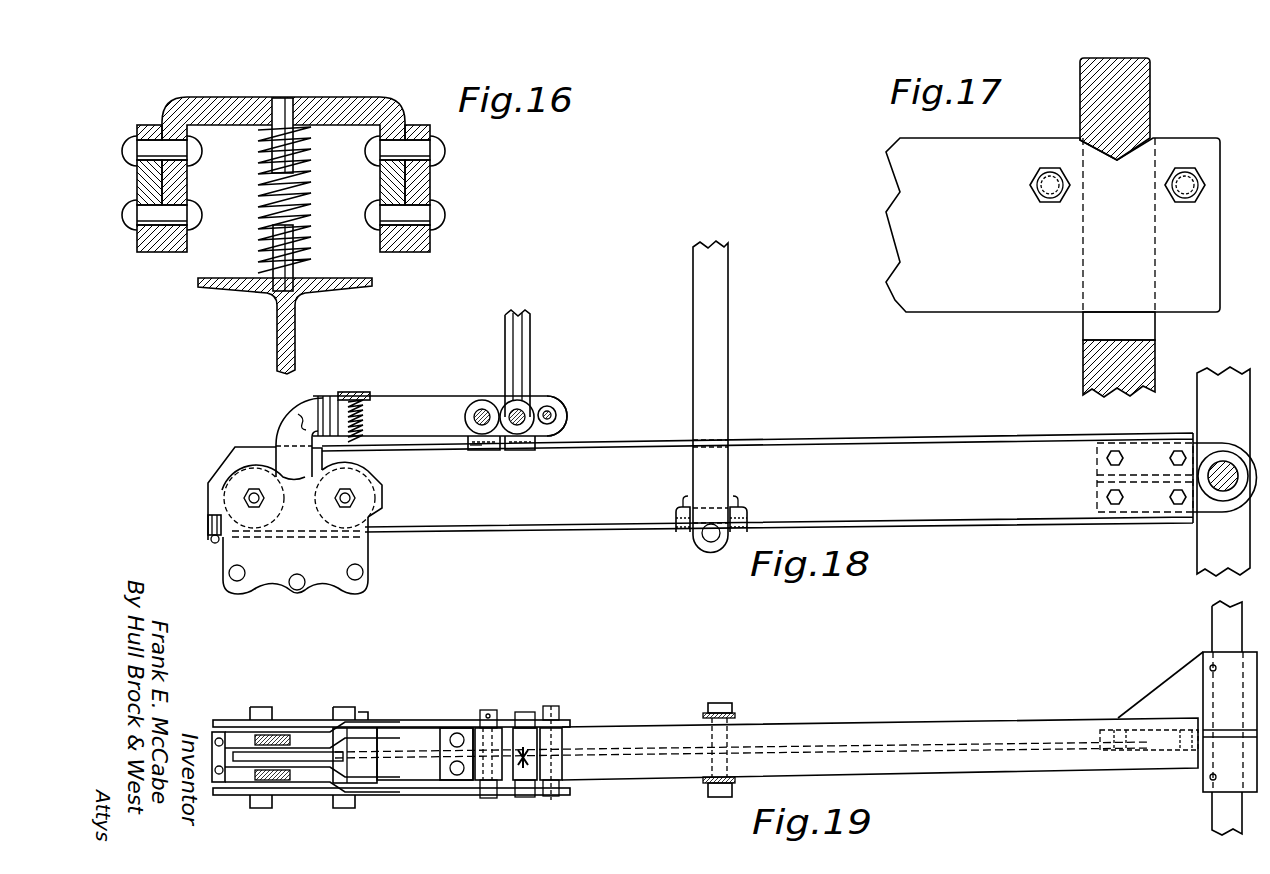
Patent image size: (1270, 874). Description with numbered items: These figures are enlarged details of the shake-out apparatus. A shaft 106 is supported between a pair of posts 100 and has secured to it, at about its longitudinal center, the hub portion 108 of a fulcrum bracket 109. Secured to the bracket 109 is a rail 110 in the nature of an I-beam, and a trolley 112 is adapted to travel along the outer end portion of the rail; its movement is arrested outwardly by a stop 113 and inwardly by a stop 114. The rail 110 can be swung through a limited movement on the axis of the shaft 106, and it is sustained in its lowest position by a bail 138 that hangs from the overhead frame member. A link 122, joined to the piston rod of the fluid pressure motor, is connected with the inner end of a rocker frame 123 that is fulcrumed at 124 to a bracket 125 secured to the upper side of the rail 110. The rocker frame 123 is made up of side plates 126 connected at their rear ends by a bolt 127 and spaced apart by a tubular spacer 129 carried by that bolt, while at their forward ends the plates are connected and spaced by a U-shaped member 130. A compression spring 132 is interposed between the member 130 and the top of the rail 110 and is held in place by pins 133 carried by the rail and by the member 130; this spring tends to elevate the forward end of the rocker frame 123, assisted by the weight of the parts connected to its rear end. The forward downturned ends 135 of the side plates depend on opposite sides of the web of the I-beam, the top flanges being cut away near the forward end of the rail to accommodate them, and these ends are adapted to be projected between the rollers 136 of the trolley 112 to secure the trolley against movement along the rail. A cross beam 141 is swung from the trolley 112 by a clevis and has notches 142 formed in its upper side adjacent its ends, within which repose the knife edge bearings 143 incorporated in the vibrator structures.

In FIG. 18, the post 100 is at (1207, 559).
In FIG. 18, the shaft 106 is at (1229, 493).
In FIG. 19, the shaft 106 is at (1212, 815).
In FIG. 19, the hub portion 108 is at (1226, 662).
In FIG. 18, the fulcrum bracket 109 is at (1211, 443).
In FIG. 19, the fulcrum bracket 109 is at (1172, 688).
In FIG. 16, the rail 110 is at (230, 276).
In FIG. 18, the rail 110 is at (900, 448).
In FIG. 19, the rail 110 is at (766, 749).
In FIG. 18, the trolley 112 is at (295, 555).
In FIG. 18, the stop 113 is at (208, 524).
In FIG. 19, the stop 113 is at (211, 733).
In FIG. 18, the stop 114 is at (678, 519).
In FIG. 18, the link 122 is at (518, 358).
In FIG. 18, the rocker frame 123 is at (288, 420).
In FIG. 18, the fulcrum 124 is at (483, 409).
In FIG. 19, the fulcrum 124 is at (482, 710).
In FIG. 18, the bracket 125 is at (478, 450).
In FIG. 16, the side plate 126 is at (137, 188).
In FIG. 18, the side plate 126 is at (434, 406).
In FIG. 19, the side plate 126 is at (424, 726).
In FIG. 18, the bolt 127 is at (566, 416).
In FIG. 19, the bolt 127 is at (553, 708).
In FIG. 18, the tubular spacer 129 is at (551, 410).
In FIG. 19, the tubular spacer 129 is at (583, 745).
In FIG. 16, the U-shaped member 130 is at (360, 98).
In FIG. 18, the U-shaped member 130 is at (358, 399).
In FIG. 19, the U-shaped member 130 is at (366, 730).
In FIG. 16, the compression spring 132 is at (312, 188).
In FIG. 18, the compression spring 132 is at (366, 420).
In FIG. 16, the pin 133 is at (272, 152).
In FIG. 18, the forward downturned end 135 is at (286, 446).
In FIG. 18, the roller 136 is at (236, 480).
In FIG. 19, the roller 136 is at (244, 733).
In FIG. 18, the bail 138 is at (718, 352).
In FIG. 19, the bail 138 is at (737, 717).
In FIG. 17, the cross beam 141 is at (1053, 225).
In FIG. 17, the notch 142 is at (1152, 137).
In FIG. 17, the knife edge bearing 143 is at (1117, 161).